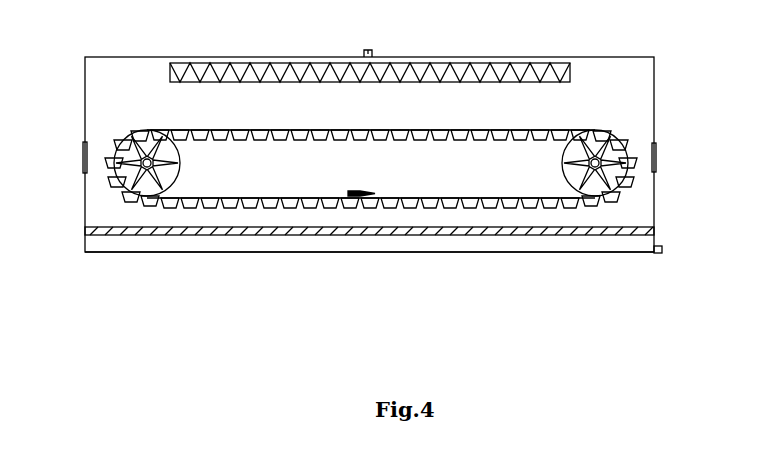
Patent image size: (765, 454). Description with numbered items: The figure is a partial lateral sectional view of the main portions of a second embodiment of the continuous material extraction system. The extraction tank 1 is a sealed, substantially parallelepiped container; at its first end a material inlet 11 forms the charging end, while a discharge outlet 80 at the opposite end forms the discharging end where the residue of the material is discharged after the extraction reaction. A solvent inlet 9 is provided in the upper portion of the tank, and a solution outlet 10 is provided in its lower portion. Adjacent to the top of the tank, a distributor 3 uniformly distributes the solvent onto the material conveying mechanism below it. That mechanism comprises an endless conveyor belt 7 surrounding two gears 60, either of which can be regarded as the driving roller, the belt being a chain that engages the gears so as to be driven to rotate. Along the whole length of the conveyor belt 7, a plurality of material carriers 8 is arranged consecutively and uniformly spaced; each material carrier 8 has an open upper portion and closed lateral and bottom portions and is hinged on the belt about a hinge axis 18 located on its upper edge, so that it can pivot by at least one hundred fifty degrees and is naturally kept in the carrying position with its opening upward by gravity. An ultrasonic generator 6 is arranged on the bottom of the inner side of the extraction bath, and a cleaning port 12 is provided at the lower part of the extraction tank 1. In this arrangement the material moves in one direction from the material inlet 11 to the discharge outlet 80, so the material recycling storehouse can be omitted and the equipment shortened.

The extraction tank 1 is at (95, 83).
The distributor 3 is at (270, 73).
The solvent inlet 9 is at (370, 52).
The hinge axis 18 is at (510, 128).
The gear 60 is at (628, 138).
The conveyor belt 7 is at (118, 152).
The material carrier 8 is at (110, 150).
The material inlet 11 is at (83, 171).
The discharge outlet 80 is at (656, 167).
The ultrasonic generator 6 is at (647, 233).
The cleaning port 12 is at (83, 252).
The solution outlet 10 is at (659, 250).